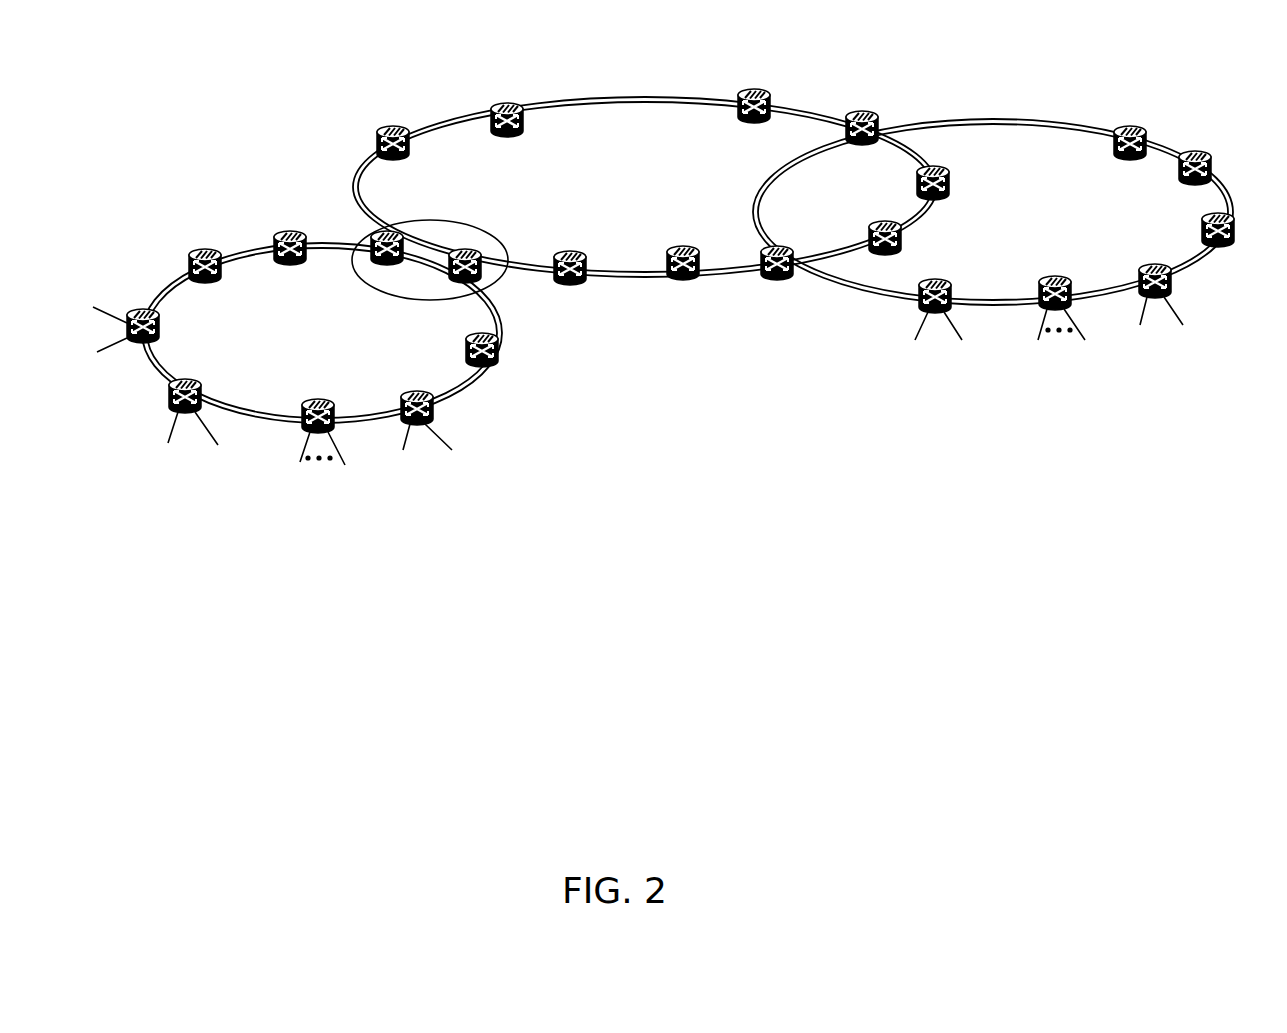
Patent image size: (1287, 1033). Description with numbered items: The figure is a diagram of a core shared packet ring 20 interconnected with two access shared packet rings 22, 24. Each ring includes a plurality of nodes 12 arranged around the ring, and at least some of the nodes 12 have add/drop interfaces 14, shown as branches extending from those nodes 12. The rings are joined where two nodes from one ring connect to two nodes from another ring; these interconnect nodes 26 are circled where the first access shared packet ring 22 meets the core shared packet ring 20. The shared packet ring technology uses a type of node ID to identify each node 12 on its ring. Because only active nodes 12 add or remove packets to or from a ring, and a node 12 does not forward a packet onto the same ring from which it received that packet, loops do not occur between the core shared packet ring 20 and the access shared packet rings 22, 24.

The node 12 is at (405, 122).
The add/drop interface 14 is at (347, 465).
The core shared packet ring 20 is at (620, 116).
The access shared packet ring 22 is at (249, 250).
The access shared packet ring 24 is at (981, 132).
The interconnect node 26 is at (482, 232).